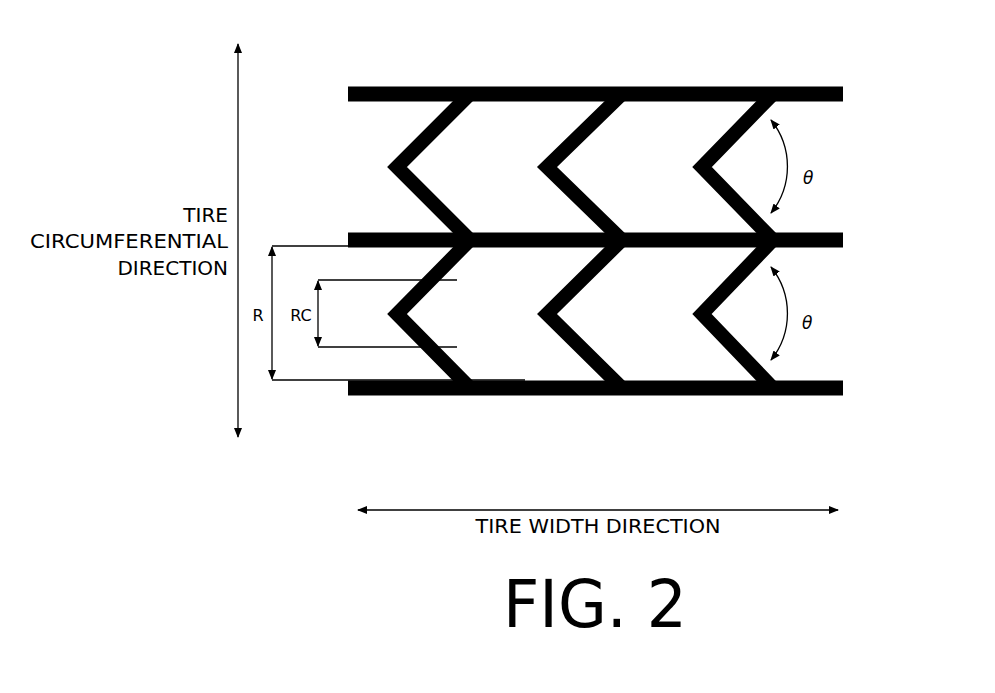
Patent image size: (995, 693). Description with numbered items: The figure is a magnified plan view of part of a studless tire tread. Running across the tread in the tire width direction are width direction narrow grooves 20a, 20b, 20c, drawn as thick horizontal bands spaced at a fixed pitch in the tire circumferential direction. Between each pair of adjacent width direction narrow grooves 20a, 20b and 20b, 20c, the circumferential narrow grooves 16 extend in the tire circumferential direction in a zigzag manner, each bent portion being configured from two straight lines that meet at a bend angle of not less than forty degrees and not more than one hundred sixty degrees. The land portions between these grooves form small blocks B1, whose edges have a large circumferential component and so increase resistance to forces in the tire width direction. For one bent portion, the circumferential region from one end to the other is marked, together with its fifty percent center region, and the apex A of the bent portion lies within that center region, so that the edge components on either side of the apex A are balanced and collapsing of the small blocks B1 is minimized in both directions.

The circumferential narrow groove 16 is at (713, 128).
The width direction narrow groove 20a is at (823, 86).
The width direction narrow groove 20b is at (823, 249).
The width direction narrow groove 20c is at (836, 398).
The small block B1 is at (513, 147).
The apex of the bent portion A is at (396, 314).